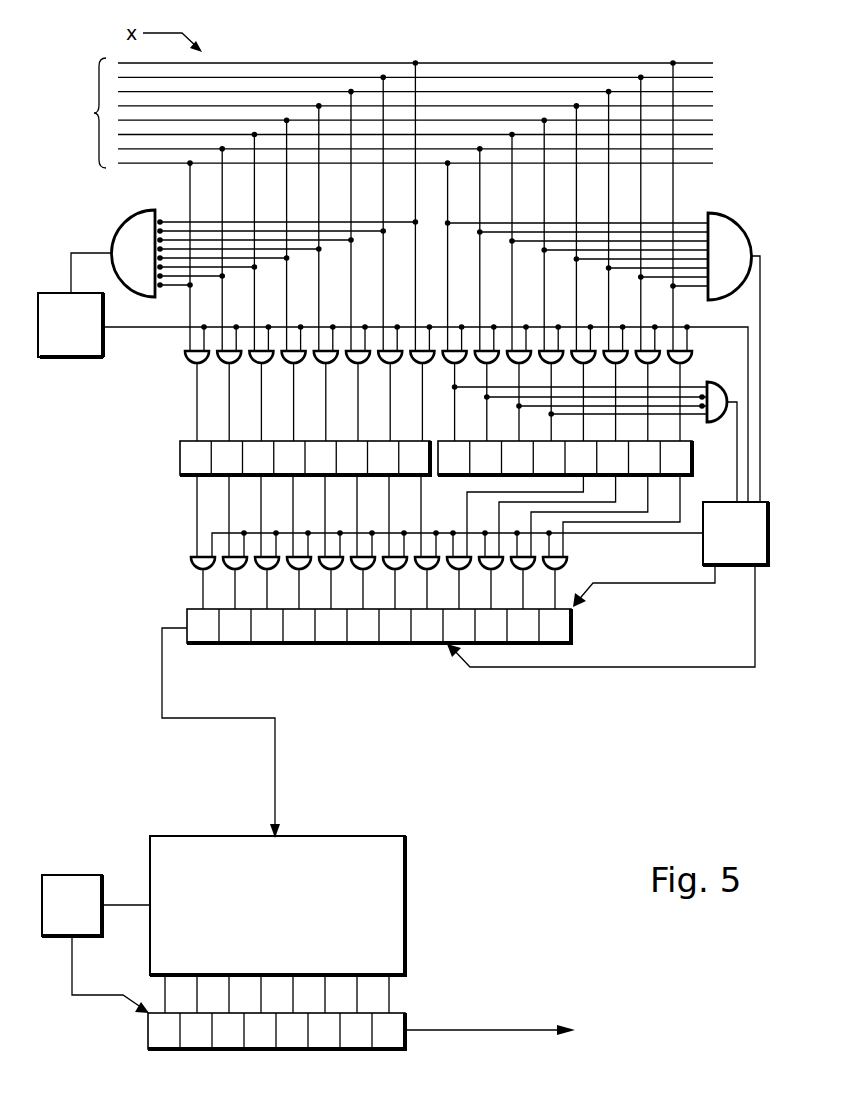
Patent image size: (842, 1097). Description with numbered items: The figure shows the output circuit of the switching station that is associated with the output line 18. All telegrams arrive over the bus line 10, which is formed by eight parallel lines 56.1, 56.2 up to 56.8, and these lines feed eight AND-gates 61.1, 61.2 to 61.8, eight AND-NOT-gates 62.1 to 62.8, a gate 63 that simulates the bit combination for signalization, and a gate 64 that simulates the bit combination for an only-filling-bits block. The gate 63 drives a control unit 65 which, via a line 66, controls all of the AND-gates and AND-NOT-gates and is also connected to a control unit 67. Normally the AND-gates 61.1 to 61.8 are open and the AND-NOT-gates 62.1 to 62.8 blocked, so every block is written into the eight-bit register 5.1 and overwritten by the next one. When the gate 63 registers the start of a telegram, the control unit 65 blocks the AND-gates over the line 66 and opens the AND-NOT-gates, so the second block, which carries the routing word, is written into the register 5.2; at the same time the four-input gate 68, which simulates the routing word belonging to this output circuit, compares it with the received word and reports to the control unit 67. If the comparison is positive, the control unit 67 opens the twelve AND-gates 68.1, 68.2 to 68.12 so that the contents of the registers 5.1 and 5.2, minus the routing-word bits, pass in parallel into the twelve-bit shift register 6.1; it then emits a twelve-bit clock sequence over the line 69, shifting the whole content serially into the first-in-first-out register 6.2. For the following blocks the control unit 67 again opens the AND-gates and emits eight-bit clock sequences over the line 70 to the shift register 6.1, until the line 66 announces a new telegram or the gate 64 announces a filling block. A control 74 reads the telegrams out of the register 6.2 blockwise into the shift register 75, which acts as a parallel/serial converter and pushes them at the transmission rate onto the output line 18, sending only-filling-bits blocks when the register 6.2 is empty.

The bus line 10 is at (415, 104).
The line 56.1 is at (711, 163).
The line 56.2 is at (711, 149).
The line 56.8 is at (711, 63).
The gate 63 is at (131, 232).
The gate 64 is at (724, 224).
The control unit 65 is at (58, 293).
The line 66 is at (137, 327).
The AND-gate 61.1 is at (186, 358).
The AND-gate 61.2 is at (219, 363).
The AND-gate 61.8 is at (416, 365).
The AND-NOT-gate 62.1 is at (443, 365).
The AND-NOT-gate 62.8 is at (691, 358).
The gate 68 is at (724, 378).
The register 5.1 is at (181, 462).
The register 5.2 is at (694, 442).
The control unit 67 is at (724, 502).
The AND-gate 68.1 is at (191, 566).
The AND-gate 68.2 is at (222, 556).
The AND-gate 68.12 is at (567, 562).
The line 69 is at (677, 584).
The shift register 6.1 is at (361, 645).
The line 70 is at (655, 668).
The control 74 is at (73, 875).
The first-in-first-out register 6.2 is at (407, 895).
The shift register 75 is at (407, 1013).
The output line 18 is at (495, 1030).